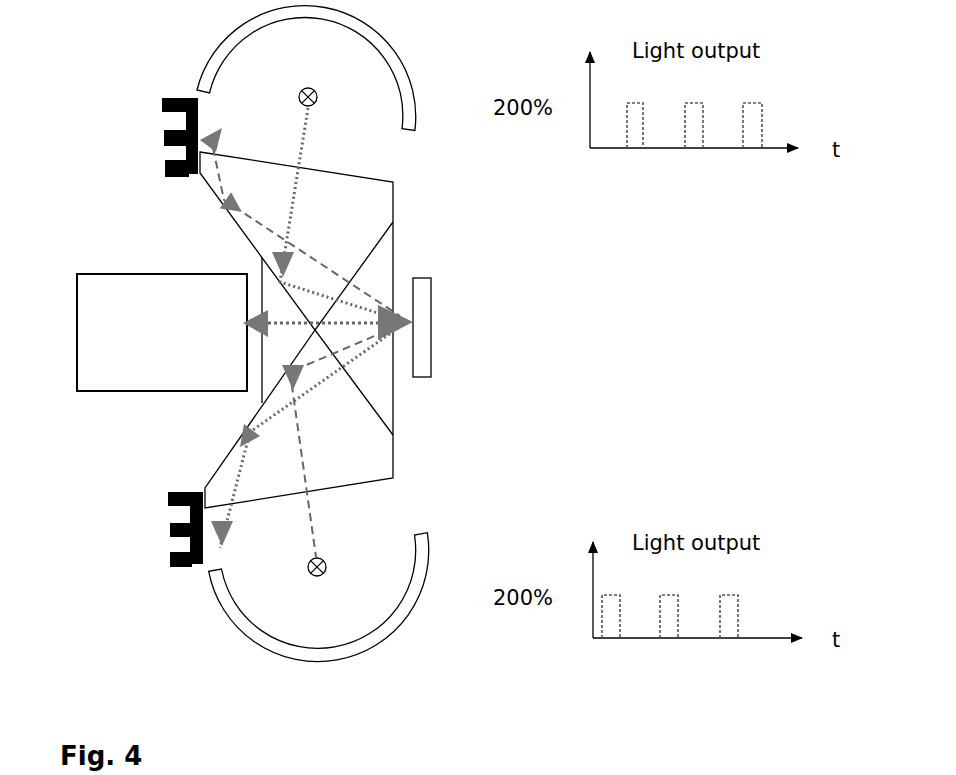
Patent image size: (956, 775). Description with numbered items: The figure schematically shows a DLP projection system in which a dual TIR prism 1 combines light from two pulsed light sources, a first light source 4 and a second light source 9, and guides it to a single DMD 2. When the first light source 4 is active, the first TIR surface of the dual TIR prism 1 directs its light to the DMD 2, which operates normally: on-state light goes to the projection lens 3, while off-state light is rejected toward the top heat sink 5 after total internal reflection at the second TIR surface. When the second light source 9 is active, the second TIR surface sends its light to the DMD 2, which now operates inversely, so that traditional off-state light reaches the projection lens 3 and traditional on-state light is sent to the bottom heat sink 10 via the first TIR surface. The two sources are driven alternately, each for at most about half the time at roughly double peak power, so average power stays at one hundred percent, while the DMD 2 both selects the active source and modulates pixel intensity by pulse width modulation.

The dual TIR prism 1 is at (400, 408).
The DMD 2 is at (435, 347).
The projection lens 3 is at (178, 398).
The first light source 4 is at (415, 610).
The top heat sink 5 is at (153, 98).
The second light source 9 is at (400, 55).
The bottom heat sink 10 is at (160, 568).